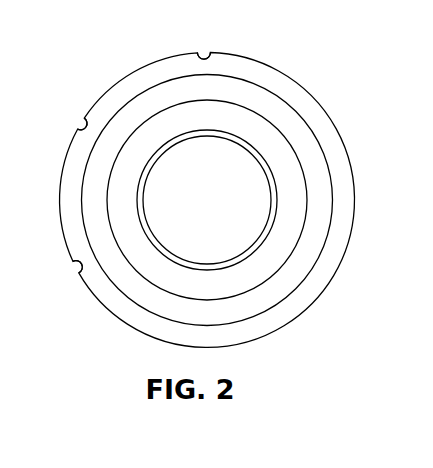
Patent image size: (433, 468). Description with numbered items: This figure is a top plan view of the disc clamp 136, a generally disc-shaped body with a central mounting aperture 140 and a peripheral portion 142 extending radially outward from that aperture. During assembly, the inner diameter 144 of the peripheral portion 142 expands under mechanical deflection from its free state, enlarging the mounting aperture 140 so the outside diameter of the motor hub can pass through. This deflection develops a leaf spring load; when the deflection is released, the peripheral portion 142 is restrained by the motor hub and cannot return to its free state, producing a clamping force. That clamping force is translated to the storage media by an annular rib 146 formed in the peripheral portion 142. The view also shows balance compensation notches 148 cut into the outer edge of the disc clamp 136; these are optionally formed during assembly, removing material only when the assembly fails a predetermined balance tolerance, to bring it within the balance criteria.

The disc clamp 136 is at (147, 43).
The central mounting aperture 140 is at (248, 182).
The peripheral portion 142 is at (281, 253).
The inner diameter 144 is at (144, 199).
The annular rib 146 is at (165, 98).
The balance compensation notch 148 is at (204, 52).